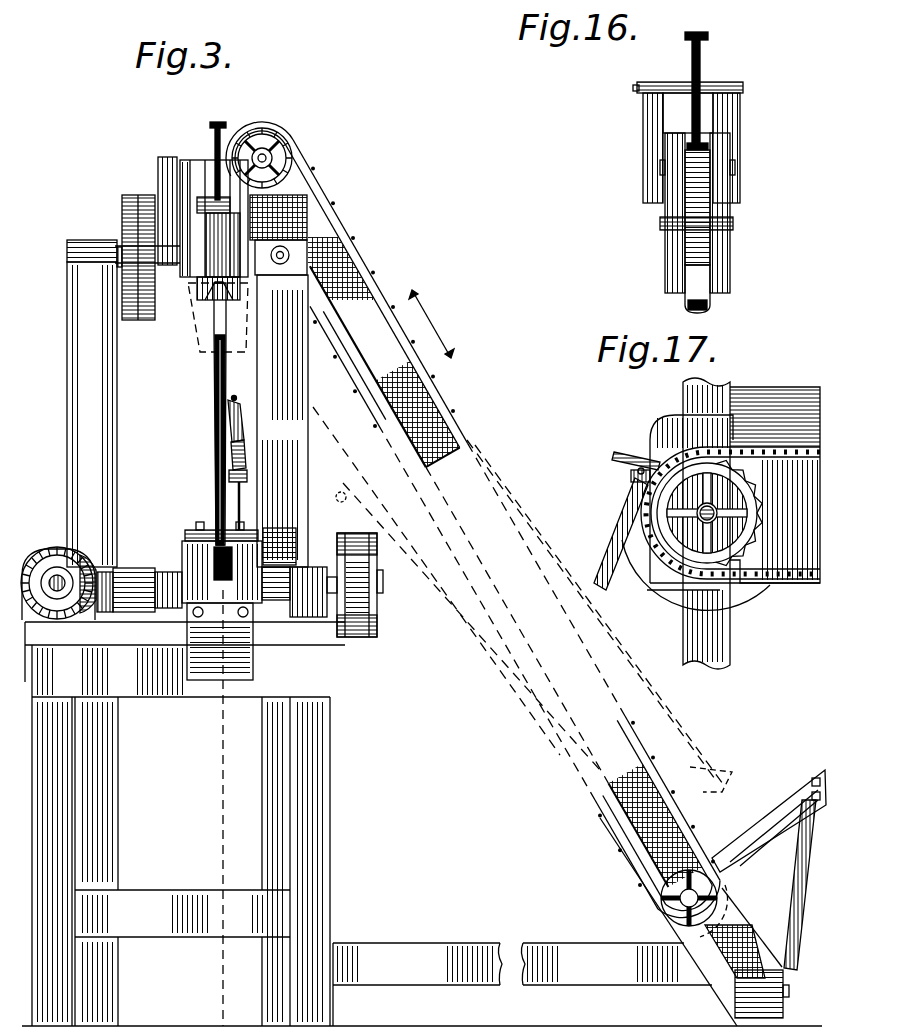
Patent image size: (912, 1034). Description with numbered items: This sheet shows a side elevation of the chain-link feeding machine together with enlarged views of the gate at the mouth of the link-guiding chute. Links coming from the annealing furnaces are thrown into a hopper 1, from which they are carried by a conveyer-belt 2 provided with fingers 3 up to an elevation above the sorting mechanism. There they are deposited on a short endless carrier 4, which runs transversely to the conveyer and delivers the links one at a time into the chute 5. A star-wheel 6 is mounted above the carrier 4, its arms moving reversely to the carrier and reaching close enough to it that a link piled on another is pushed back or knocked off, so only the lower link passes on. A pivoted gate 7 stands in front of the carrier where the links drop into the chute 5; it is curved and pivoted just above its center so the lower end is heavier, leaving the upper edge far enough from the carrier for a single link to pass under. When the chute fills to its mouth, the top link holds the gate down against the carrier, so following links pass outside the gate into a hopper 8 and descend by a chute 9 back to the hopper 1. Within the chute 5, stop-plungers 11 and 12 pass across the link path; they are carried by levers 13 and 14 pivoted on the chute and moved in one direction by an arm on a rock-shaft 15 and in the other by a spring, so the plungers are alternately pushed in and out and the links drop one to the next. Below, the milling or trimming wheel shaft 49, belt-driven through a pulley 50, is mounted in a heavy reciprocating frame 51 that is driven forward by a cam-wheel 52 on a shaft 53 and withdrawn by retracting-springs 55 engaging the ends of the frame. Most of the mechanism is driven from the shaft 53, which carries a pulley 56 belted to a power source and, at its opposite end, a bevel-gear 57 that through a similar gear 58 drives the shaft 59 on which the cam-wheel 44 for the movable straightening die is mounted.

In FIG. 3, the hopper 1 is at (771, 808).
In FIG. 3, the conveyer-belt 2 is at (461, 405).
In FIG. 3, the fingers 3 is at (324, 178).
In FIG. 3, the short endless carrier 4 is at (256, 104).
In FIG. 17, the short endless carrier 4 is at (763, 452).
In FIG. 3, the chute 5 is at (214, 388).
In FIG. 16, the chute 5 is at (712, 298).
In FIG. 17, the chute 5 is at (603, 570).
In FIG. 3, the star-wheel 6 is at (212, 136).
In FIG. 16, the star-wheel 6 is at (703, 60).
In FIG. 3, the pivoted gate 7 is at (215, 237).
In FIG. 16, the pivoted gate 7 is at (692, 186).
In FIG. 17, the pivoted gate 7 is at (640, 458).
In FIG. 3, the hopper 8 is at (190, 334).
In FIG. 3, the chute 9 is at (358, 478).
In FIG. 3, the stop-plunger 11 is at (237, 390).
In FIG. 3, the stop-plunger 12 is at (222, 467).
In FIG. 3, the lever 13 is at (240, 421).
In FIG. 3, the lever 14 is at (243, 455).
In FIG. 3, the rock-shaft 15 is at (247, 506).
In FIG. 3, the cam-wheel 44 is at (47, 552).
In FIG. 3, the shaft 49 is at (183, 548).
In FIG. 3, the pulley 50 is at (286, 530).
In FIG. 3, the reciprocating frame 51 is at (196, 533).
In FIG. 3, the cam-wheel 52 is at (218, 586).
In FIG. 3, the shaft 53 is at (383, 586).
In FIG. 3, the retracting-springs 55 is at (243, 616).
In FIG. 3, the pulley 56 is at (360, 634).
In FIG. 3, the bevel-gear 57 is at (110, 598).
In FIG. 3, the bevel-gear 58 is at (78, 560).
In FIG. 3, the shaft 59 is at (62, 598).